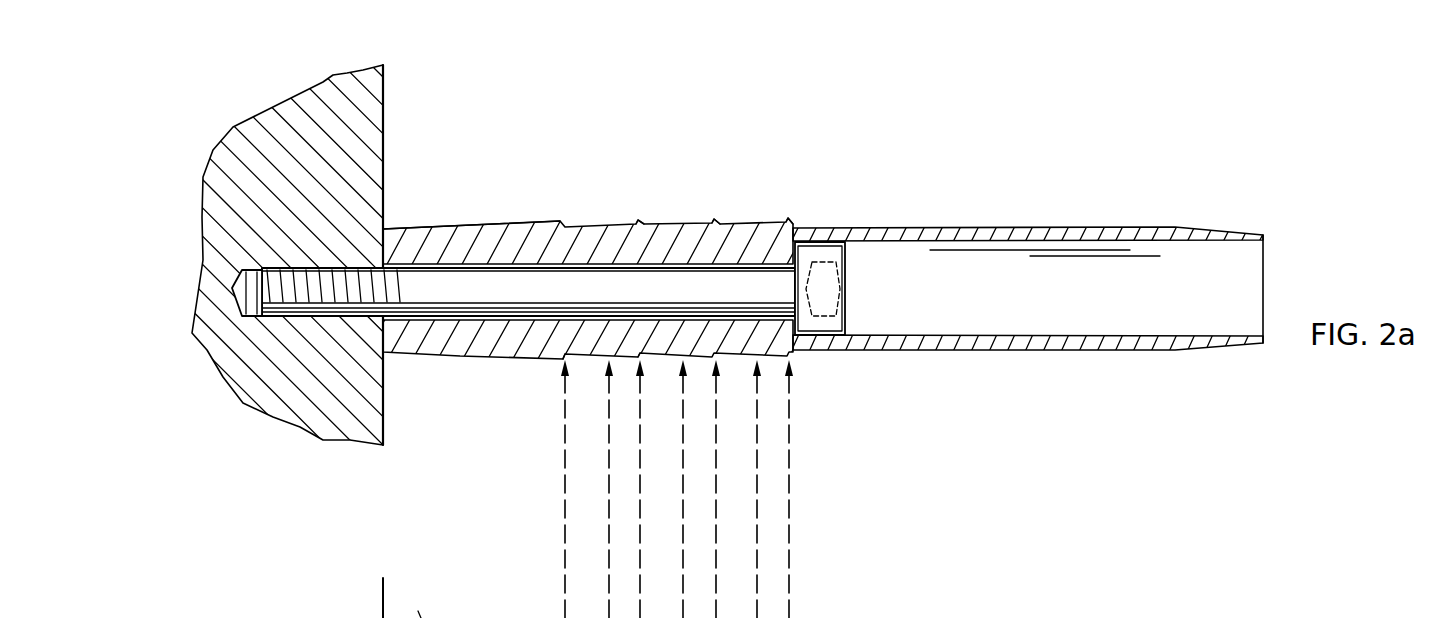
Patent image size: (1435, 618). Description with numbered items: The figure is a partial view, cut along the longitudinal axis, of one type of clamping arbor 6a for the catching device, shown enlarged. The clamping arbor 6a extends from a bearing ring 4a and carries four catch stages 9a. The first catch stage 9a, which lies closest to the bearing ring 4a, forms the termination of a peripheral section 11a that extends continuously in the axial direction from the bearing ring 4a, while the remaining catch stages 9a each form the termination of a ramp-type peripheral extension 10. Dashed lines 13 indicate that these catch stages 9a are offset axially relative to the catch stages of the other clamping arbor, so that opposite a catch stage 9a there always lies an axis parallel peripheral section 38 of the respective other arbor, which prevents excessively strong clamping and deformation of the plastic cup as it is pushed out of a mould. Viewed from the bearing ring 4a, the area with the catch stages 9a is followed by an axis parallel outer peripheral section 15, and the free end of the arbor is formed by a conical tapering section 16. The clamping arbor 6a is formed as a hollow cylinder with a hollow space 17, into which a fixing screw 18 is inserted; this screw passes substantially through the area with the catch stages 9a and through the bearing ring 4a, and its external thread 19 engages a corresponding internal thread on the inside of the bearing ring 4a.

The bearing ring 4a is at (377, 115).
The peripheral section 11a is at (560, 190).
The catch stage 9a is at (648, 221).
The ramp-type peripheral extension 10 is at (773, 222).
The axis parallel outer peripheral section 15 is at (788, 148).
The conical tapering section 16 is at (1260, 148).
The clamping arbor 6a is at (1017, 230).
The hollow space 17 is at (1059, 316).
The fixing screw 18 is at (500, 312).
The external thread 19 is at (313, 318).
The axis parallel peripheral section 38 is at (663, 360).
The dashed lines 13 is at (812, 537).